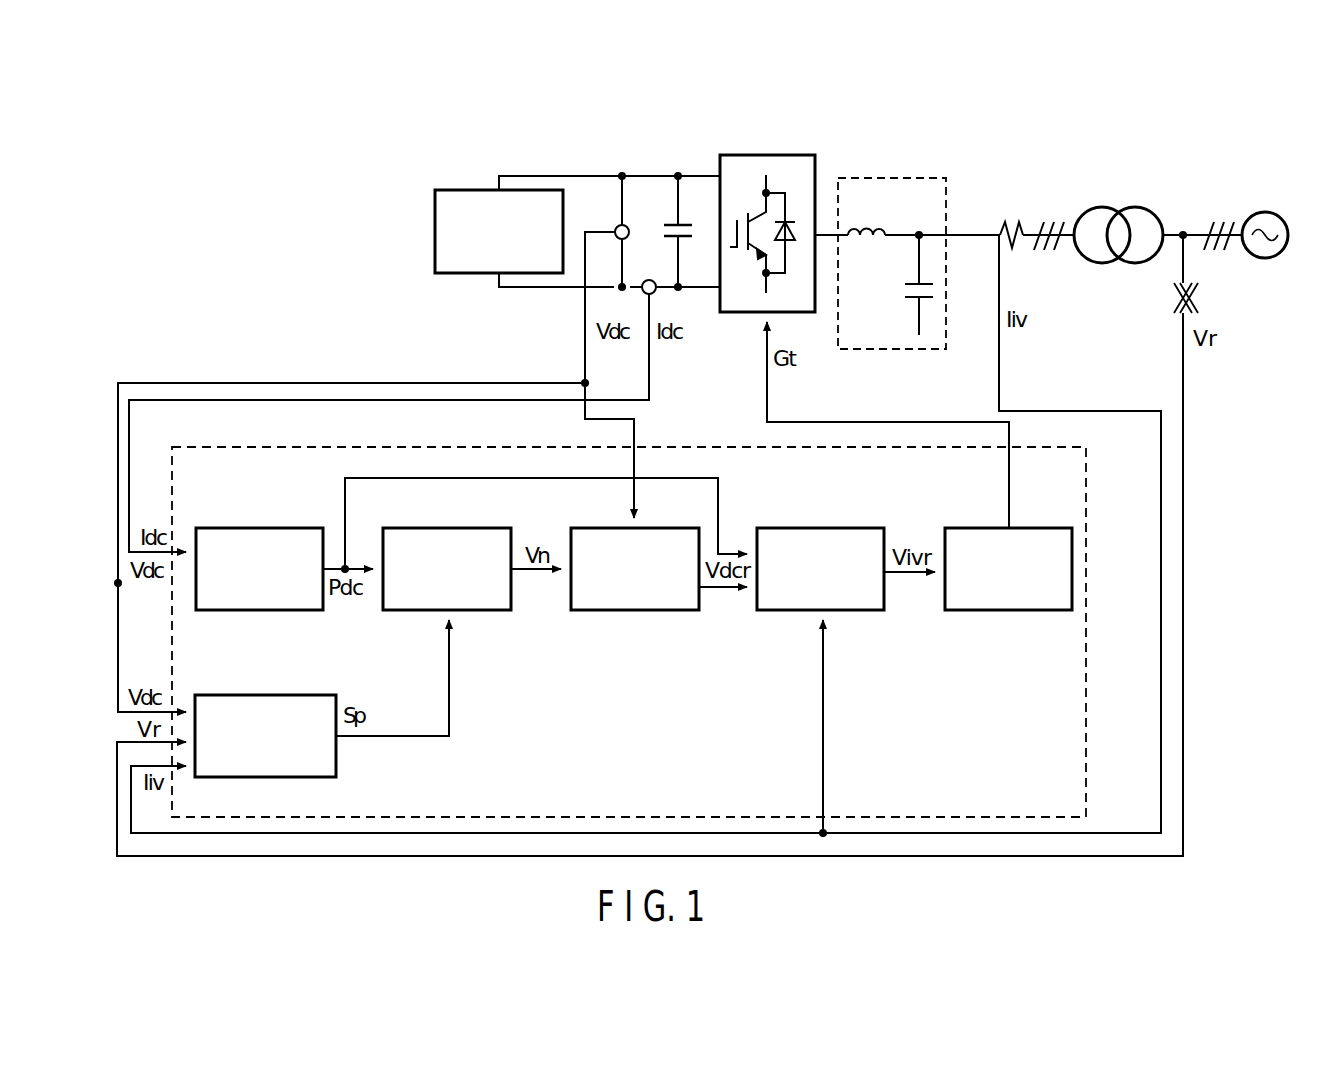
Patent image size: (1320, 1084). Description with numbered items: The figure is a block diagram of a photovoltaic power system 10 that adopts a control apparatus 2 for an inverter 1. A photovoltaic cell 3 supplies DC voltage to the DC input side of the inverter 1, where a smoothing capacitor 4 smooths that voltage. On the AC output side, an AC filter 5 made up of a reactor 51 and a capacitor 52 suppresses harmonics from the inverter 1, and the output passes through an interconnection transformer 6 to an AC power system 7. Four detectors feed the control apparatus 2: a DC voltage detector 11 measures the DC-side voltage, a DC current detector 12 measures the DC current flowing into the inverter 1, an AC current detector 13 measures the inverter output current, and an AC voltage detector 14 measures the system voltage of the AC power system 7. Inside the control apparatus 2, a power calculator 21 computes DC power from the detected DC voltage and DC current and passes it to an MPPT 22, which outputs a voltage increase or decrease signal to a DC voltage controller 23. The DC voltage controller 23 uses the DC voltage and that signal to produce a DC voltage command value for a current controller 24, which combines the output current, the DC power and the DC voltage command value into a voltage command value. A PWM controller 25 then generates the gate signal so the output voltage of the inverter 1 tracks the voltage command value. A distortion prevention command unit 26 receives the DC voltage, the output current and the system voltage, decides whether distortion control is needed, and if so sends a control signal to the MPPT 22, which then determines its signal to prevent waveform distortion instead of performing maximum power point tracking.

The inverter 1 is at (766, 154).
The control apparatus 2 is at (1034, 818).
The photovoltaic cell 3 is at (446, 189).
The smoothing capacitor 4 is at (696, 230).
The AC filter 5 is at (892, 236).
The reactor 51 is at (867, 242).
The capacitor 52 is at (905, 291).
The interconnection transformer 6 is at (1102, 206).
The AC power system 7 is at (1265, 211).
The photovoltaic power system 10 is at (1150, 124).
The DC voltage detector 11 is at (632, 224).
The DC current detector 12 is at (648, 279).
The AC current detector 13 is at (1015, 228).
The AC voltage detector 14 is at (1200, 301).
The power calculator 21 is at (252, 527).
The maximum power point tracking (MPPT) 22 is at (449, 527).
The DC voltage controller 23 is at (590, 527).
The current controller 24 is at (840, 527).
The PWM controller 25 is at (1043, 527).
The distortion prevention command unit 26 is at (252, 694).